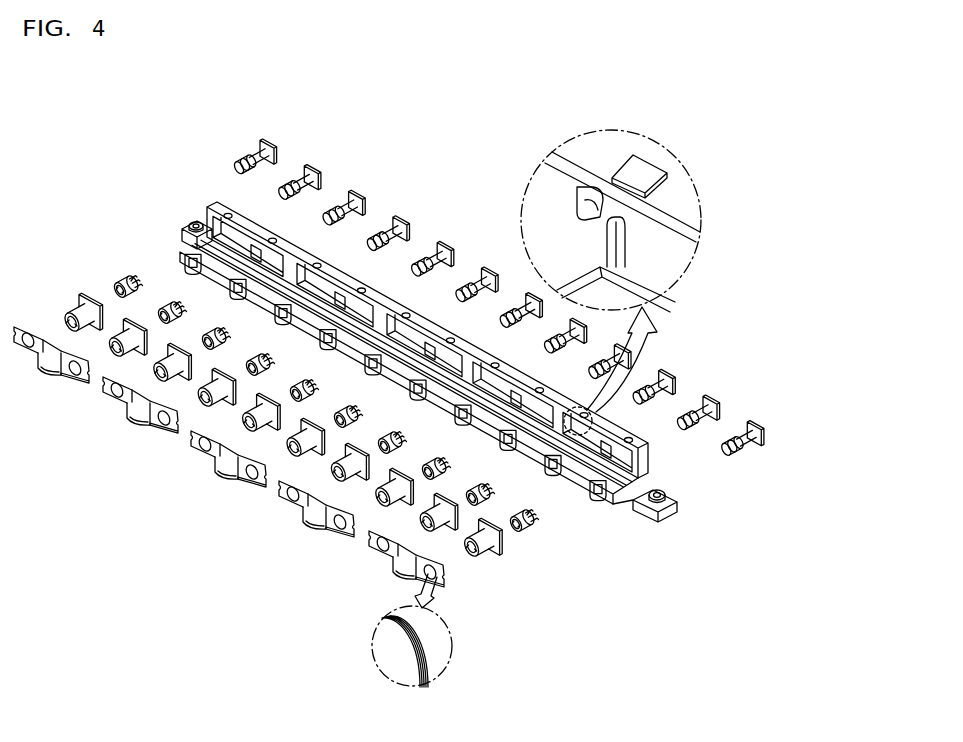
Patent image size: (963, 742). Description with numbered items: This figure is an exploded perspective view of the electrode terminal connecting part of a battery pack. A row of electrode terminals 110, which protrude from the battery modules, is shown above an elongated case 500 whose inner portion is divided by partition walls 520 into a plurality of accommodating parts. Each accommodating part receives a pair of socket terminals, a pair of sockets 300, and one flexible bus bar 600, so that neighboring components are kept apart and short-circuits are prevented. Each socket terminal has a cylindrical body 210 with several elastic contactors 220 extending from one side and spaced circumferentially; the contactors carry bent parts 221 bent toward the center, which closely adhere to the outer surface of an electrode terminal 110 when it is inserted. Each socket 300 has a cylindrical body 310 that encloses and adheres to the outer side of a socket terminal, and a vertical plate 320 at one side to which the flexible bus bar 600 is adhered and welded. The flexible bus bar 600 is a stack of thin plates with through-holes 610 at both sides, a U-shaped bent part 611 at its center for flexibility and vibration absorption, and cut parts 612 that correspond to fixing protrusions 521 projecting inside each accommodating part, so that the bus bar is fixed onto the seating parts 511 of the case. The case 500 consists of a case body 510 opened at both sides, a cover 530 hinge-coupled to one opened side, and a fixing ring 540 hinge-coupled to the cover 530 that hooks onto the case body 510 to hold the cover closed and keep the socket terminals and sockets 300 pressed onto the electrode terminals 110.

The electrode terminal 110 is at (263, 144).
The cylindrical body 210 is at (113, 253).
The elastic contactor 220 is at (133, 277).
The bent part 221 is at (115, 280).
The socket 300 is at (505, 578).
The cylindrical body 310 is at (483, 560).
The vertical plate 320 is at (498, 537).
The case 500 is at (449, 330).
The case body 510 is at (342, 270).
The seating part 511 is at (620, 248).
The partition wall 520 is at (292, 262).
The fixing protrusion 521 is at (583, 197).
The cover 530 is at (620, 503).
The fixing ring 540 is at (596, 501).
The flexible bus bar 600 is at (322, 554).
The through-hole 610 is at (297, 497).
The bent part 611 is at (307, 520).
The cut part 612 is at (352, 542).